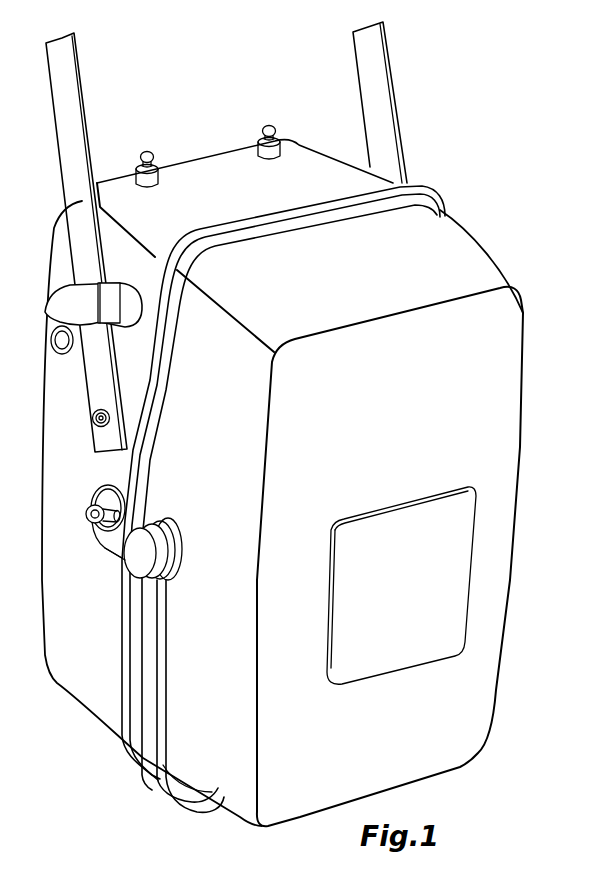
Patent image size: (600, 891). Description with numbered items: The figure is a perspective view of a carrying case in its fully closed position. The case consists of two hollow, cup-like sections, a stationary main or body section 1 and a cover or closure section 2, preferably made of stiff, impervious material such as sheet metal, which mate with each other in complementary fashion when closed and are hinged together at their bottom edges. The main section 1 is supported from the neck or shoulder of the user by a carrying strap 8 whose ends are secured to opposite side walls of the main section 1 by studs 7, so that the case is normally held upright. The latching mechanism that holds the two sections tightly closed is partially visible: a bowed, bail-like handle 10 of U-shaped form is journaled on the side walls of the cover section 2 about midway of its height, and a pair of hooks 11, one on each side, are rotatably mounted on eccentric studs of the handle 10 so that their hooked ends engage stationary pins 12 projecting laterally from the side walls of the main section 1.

The main section 1 is at (302, 150).
The cover section 2 is at (512, 314).
The studs 7 is at (92, 417).
The carrying strap 8 is at (73, 98).
The handle 10 is at (153, 780).
The hooks 11 is at (103, 538).
The stationary pins 12 is at (88, 512).